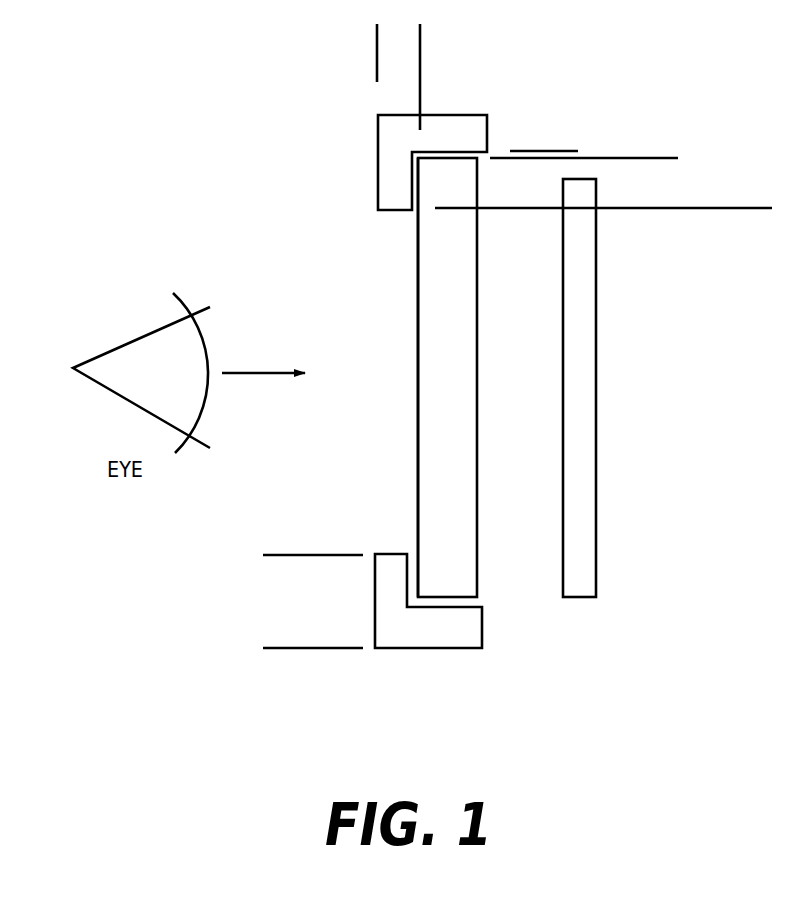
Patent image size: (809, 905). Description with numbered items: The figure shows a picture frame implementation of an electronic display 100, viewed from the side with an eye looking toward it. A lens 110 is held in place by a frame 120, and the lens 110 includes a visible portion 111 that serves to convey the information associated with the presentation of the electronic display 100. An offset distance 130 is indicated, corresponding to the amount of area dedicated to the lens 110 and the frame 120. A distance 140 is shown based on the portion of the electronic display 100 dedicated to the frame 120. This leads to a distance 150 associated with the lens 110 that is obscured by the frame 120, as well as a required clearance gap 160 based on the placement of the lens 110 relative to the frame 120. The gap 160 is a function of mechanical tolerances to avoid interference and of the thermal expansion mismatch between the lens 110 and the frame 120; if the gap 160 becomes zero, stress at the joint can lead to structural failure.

The electronic display 100 is at (580, 583).
The lens 110 is at (477, 365).
The visible portion 111 is at (418, 352).
The frame 120 is at (378, 142).
The offset distance 130 is at (512, 54).
The distance 140 is at (283, 482).
The distance 150 is at (667, 210).
The clearance gap 160 is at (544, 248).